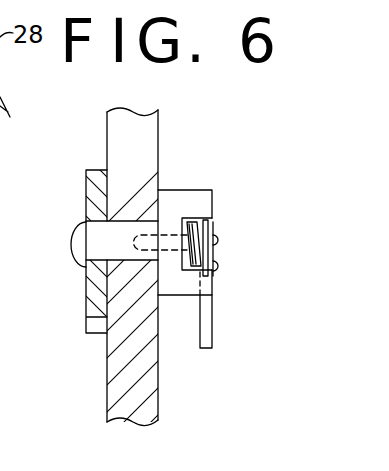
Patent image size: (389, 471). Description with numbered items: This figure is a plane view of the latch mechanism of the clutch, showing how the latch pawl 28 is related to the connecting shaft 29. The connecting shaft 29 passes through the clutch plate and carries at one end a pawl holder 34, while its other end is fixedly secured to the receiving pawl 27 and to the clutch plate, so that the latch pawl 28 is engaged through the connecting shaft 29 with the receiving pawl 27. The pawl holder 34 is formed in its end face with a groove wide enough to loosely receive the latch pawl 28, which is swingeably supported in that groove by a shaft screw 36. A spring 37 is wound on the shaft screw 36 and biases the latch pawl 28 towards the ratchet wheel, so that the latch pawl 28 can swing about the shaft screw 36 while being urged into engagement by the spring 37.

The receiving pawl 27 is at (93, 182).
The latch pawl 28 is at (205, 228).
The connecting shaft 29 is at (121, 257).
The pawl holder 34 is at (173, 195).
The shaft screw 36 is at (216, 242).
The spring 37 is at (193, 217).